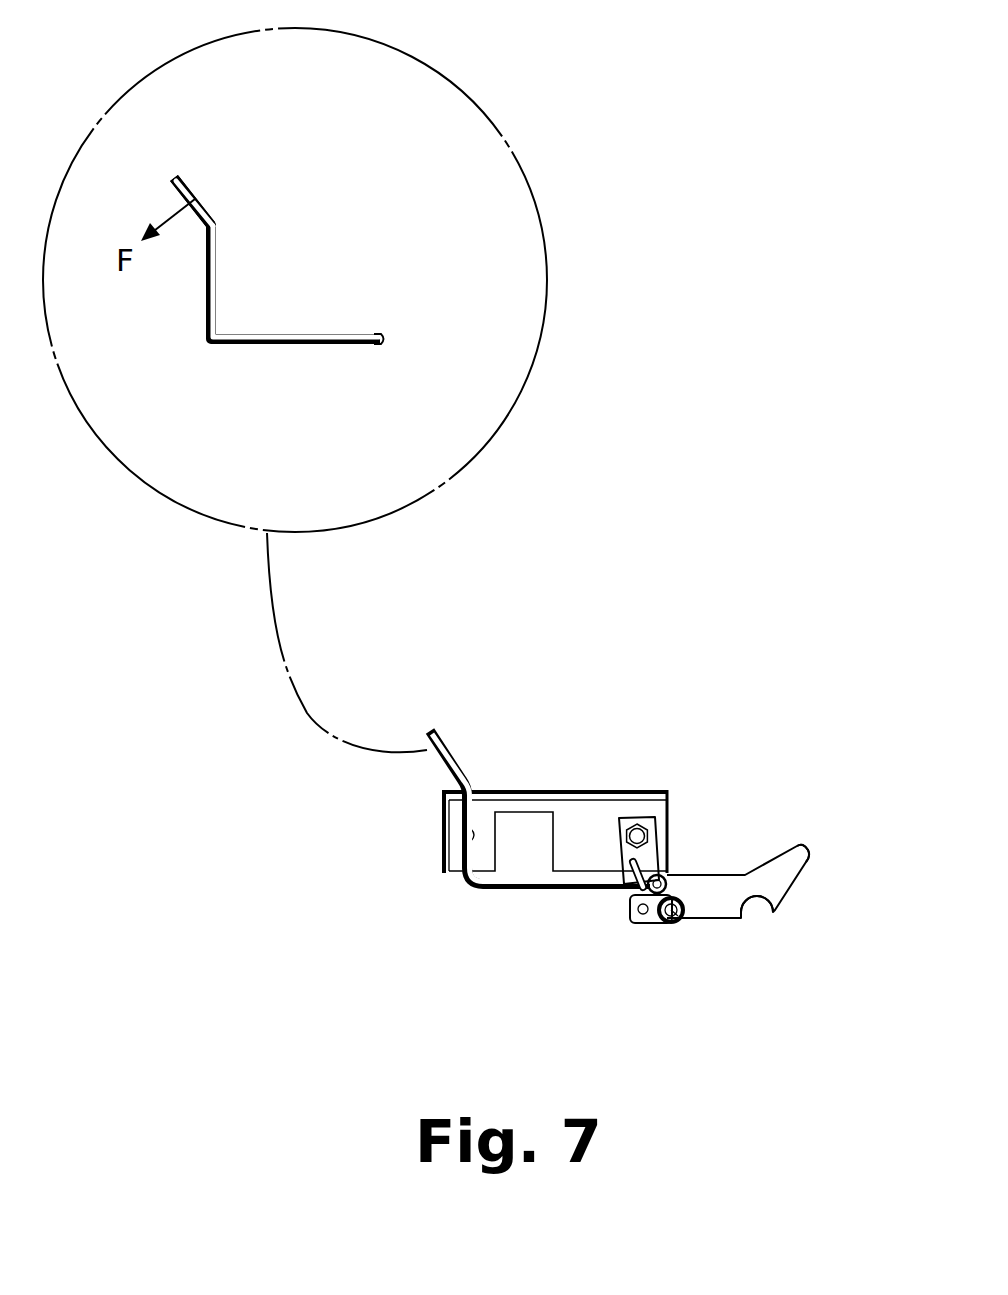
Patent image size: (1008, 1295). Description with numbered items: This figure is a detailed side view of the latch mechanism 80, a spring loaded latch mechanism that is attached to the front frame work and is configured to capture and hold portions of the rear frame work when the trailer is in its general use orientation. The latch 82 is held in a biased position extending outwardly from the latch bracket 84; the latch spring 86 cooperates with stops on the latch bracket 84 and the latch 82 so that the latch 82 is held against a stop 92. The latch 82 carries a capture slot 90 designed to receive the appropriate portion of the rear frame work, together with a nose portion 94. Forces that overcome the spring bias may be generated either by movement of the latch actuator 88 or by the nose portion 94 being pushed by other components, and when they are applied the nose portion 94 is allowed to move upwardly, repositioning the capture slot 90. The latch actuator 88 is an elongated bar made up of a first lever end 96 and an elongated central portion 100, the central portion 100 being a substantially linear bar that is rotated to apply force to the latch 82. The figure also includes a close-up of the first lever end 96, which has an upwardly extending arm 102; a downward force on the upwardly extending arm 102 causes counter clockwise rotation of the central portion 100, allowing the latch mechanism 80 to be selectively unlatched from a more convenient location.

The latch mechanism 80 is at (531, 710).
The latch 82 is at (790, 876).
The latch bracket 84 is at (647, 858).
The latch spring 86 is at (633, 902).
The latch actuator 88 is at (492, 893).
The capture slot 90 is at (753, 910).
The stop 92 is at (673, 917).
The nose portion 94 is at (808, 862).
The first lever end 96 is at (241, 343).
The central portion 100 is at (385, 340).
The upwardly extending arm 102 is at (197, 190).